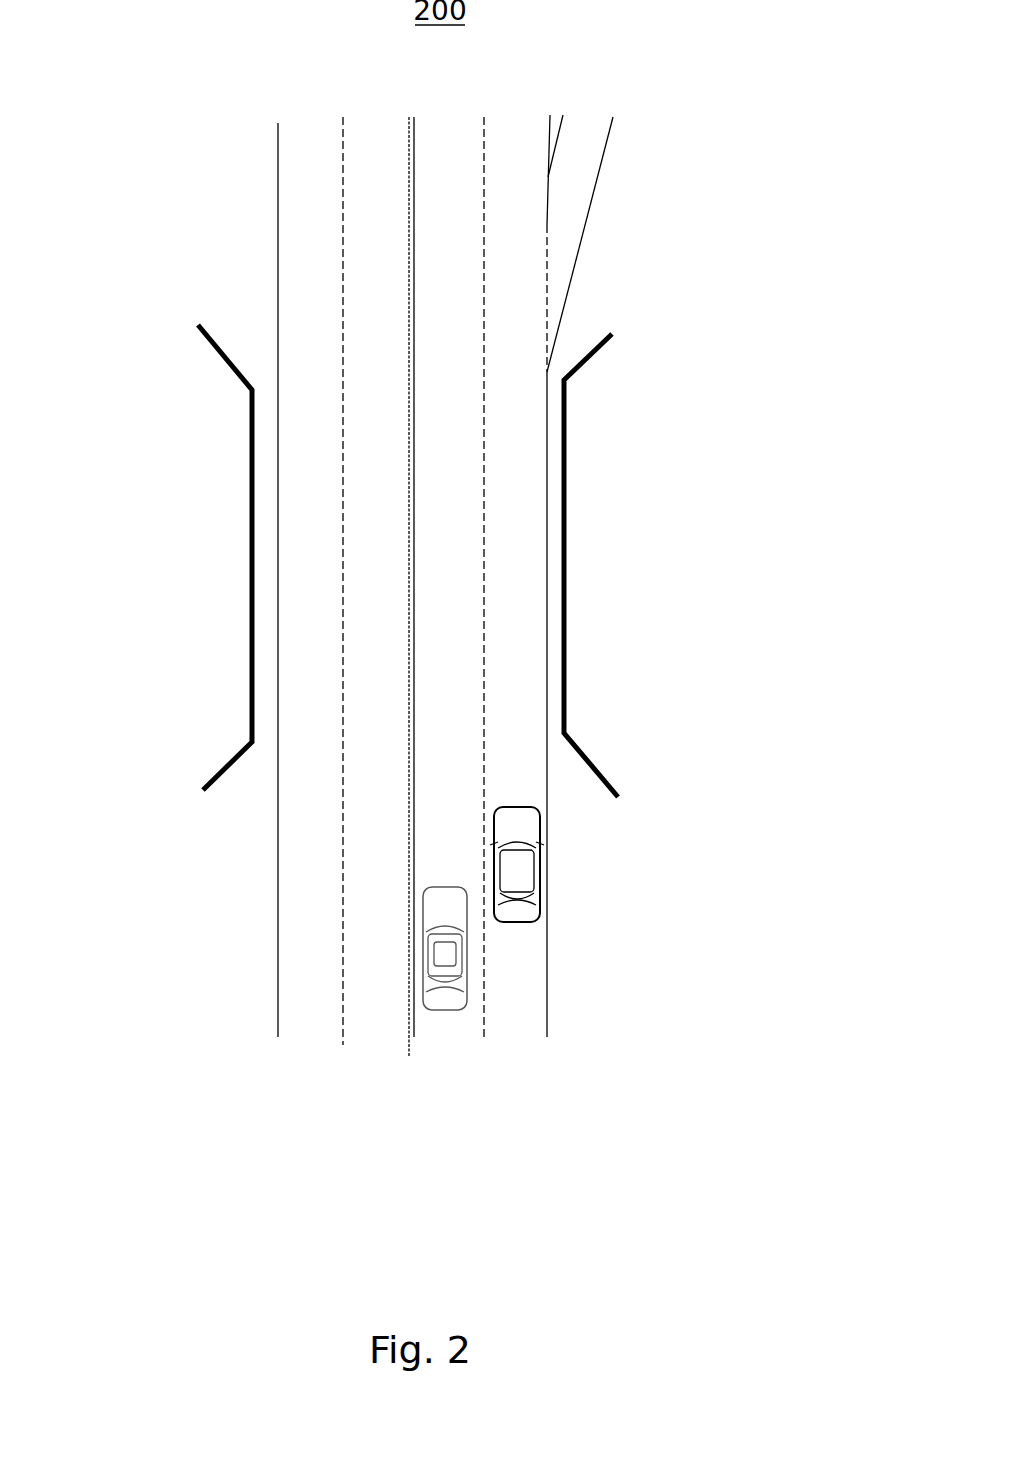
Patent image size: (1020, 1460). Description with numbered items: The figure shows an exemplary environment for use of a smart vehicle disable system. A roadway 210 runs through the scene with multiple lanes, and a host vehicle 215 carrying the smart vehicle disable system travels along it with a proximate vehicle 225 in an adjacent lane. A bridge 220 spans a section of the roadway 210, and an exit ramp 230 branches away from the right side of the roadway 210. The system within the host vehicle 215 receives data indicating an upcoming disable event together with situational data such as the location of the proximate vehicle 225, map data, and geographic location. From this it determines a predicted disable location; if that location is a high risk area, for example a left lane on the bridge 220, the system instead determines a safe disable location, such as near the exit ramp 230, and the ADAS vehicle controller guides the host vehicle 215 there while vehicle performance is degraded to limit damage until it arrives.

The roadway 210 is at (267, 895).
The host vehicle 215 is at (470, 945).
The bridge 220 is at (193, 317).
The proximate vehicle 225 is at (543, 867).
The exit ramp 230 is at (588, 200).